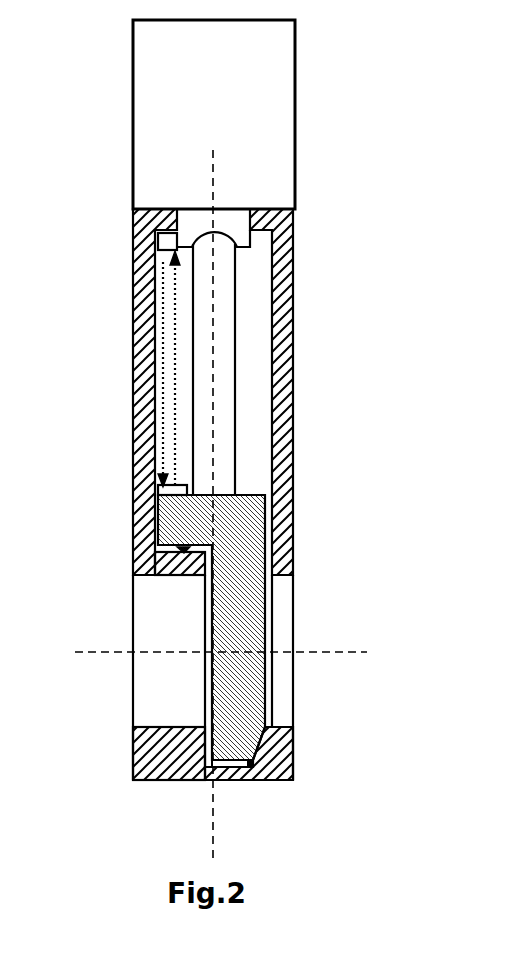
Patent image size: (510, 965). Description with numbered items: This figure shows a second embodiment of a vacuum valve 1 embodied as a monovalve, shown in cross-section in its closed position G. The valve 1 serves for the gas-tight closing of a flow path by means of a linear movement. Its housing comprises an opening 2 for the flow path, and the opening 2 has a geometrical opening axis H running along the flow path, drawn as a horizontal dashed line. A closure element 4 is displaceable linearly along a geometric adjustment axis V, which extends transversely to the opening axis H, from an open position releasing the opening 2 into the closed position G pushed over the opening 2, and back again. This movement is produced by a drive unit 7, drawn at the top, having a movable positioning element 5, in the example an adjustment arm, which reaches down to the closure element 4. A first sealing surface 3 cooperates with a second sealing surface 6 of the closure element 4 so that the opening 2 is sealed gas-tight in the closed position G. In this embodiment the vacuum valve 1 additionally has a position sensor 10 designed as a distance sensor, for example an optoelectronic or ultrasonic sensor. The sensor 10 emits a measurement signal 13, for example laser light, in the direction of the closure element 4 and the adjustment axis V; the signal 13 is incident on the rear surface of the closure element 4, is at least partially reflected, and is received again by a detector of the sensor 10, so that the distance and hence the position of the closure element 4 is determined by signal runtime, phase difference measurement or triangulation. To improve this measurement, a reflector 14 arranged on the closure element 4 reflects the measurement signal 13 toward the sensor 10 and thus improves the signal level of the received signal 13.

The vacuum valve 1 is at (161, 400).
The opening 2 is at (160, 677).
The first sealing surface 3 is at (189, 669).
The closure element 4 is at (259, 627).
The positioning element 5 is at (282, 369).
The second sealing surface 6 is at (215, 690).
The drive unit 7 is at (180, 114).
The position sensor 10 is at (98, 253).
The measurement signal 13 is at (158, 352).
The reflector 14 is at (107, 501).
The closed position G is at (164, 392).
The opening axis H is at (246, 692).
The adjustment axis V is at (182, 504).